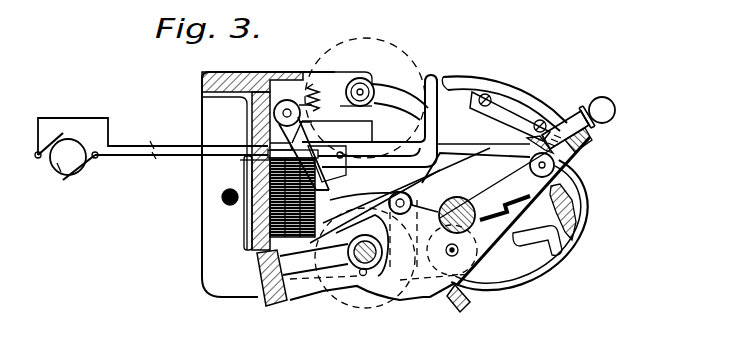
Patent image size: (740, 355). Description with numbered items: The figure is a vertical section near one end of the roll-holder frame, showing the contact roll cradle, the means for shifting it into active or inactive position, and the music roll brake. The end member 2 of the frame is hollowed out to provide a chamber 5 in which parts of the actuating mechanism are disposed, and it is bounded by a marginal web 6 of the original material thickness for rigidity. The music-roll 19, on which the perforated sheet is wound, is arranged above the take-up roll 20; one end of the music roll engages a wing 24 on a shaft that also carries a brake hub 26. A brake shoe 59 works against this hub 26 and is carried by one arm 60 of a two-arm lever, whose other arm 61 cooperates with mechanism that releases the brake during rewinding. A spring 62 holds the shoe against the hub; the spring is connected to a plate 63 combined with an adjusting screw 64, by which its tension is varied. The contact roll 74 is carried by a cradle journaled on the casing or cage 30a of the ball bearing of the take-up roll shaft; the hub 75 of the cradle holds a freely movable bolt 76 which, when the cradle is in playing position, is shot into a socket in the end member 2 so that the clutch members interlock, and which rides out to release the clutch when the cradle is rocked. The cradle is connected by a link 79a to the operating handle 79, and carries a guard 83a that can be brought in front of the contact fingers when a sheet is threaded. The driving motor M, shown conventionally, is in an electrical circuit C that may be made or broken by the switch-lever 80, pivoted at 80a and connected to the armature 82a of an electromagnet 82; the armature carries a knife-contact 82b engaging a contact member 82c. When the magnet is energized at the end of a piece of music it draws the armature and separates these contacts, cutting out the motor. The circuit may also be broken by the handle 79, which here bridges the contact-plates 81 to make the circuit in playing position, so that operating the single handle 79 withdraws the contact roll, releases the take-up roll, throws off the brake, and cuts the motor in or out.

The driving motor M is at (62, 172).
The electrical circuit C is at (149, 140).
The electromagnet 82 is at (262, 210).
The armature 82a is at (268, 162).
The contact 82b is at (246, 162).
The contact member 82c is at (290, 148).
The arm of two-arm lever 61 is at (352, 158).
The spring 62 is at (310, 142).
The plate 63 is at (312, 82).
The adjusting screw 64 is at (356, 77).
The music-roll 19 is at (395, 72).
The brake hub 26 is at (376, 93).
The wing 24 is at (380, 90).
The switch-lever 80 is at (433, 78).
The arm of two-arm lever 60 is at (332, 132).
The brake shoe 59 is at (402, 122).
The end member 2 is at (505, 87).
The chamber 5 is at (495, 122).
The contact-plates 81 is at (558, 130).
The link 79a is at (480, 172).
The pivot 80a is at (362, 162).
The casing of ball bearing 30a is at (352, 258).
The bolt 76 is at (367, 275).
The take-up roll 20 is at (325, 292).
The hub of the cradle 75 is at (407, 300).
The guard 83a is at (462, 308).
The marginal web 6 is at (548, 260).
The contact roll 74 is at (473, 222).
The operating handle 79 is at (578, 181).